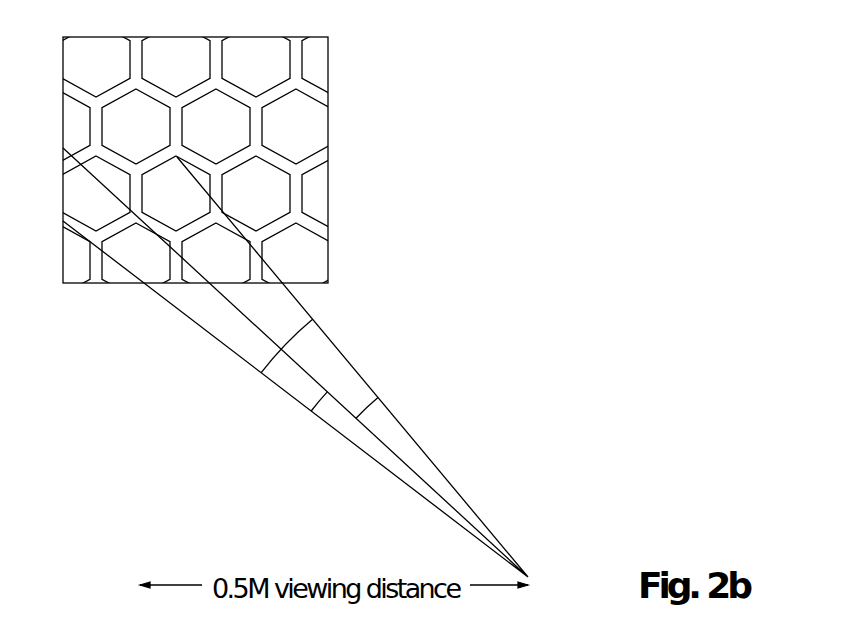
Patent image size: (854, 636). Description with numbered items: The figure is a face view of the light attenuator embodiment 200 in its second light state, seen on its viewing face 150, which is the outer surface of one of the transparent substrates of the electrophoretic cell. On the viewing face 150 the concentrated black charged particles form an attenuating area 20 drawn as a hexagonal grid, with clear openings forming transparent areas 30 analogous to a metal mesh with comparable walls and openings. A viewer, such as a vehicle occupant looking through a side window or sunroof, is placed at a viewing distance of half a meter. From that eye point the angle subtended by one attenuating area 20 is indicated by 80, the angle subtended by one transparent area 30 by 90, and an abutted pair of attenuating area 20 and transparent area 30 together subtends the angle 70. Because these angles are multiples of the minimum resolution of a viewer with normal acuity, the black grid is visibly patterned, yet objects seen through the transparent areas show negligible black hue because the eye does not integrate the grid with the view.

The attenuating area 20 is at (112, 228).
The transparent area 30 is at (173, 197).
The angle subtended by abutted attenuating and transparent area pair 70 is at (283, 346).
The angle subtended by attenuating area 80 is at (316, 405).
The angle subtended by transparent area 90 is at (375, 400).
The viewing face 150 is at (329, 187).
The light attenuator embodiment 200 is at (256, 160).